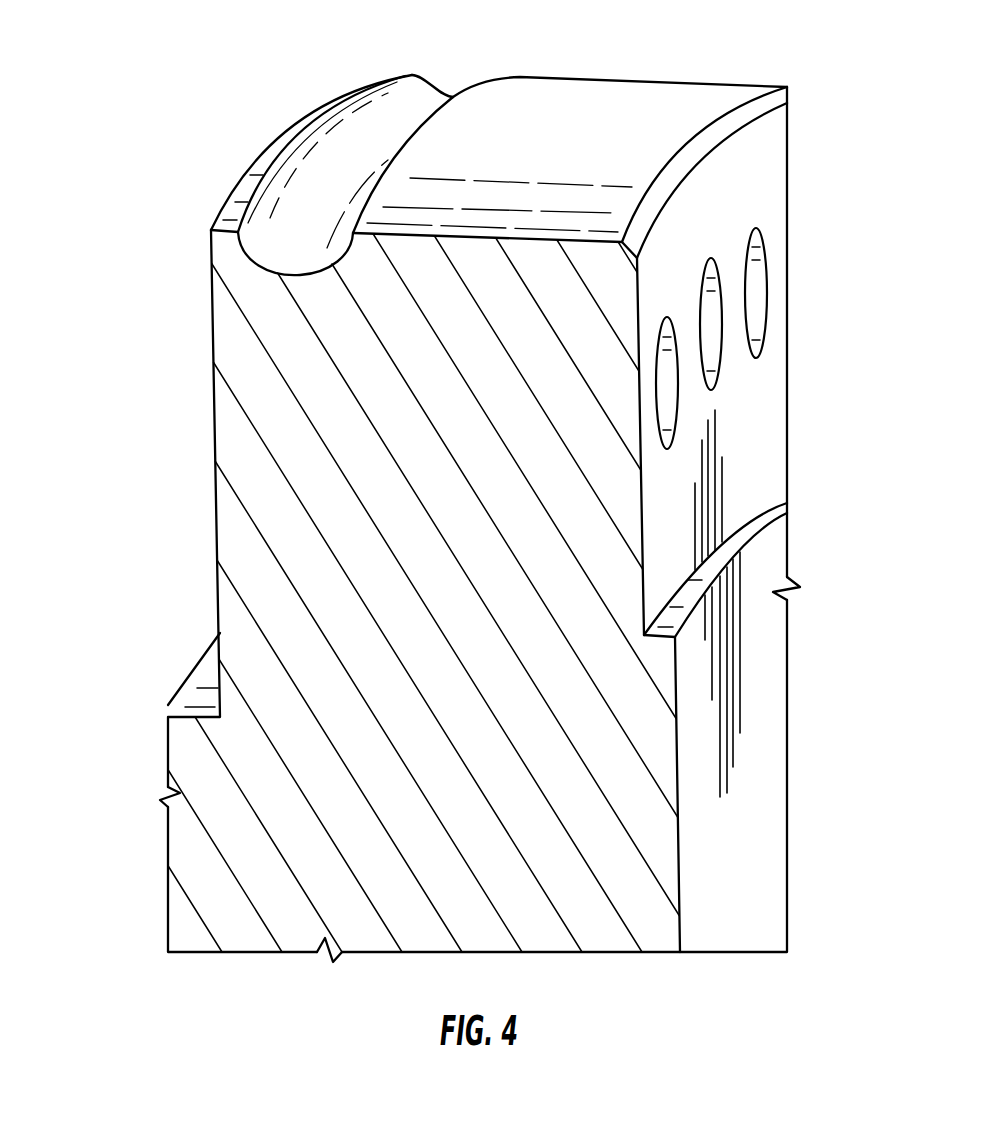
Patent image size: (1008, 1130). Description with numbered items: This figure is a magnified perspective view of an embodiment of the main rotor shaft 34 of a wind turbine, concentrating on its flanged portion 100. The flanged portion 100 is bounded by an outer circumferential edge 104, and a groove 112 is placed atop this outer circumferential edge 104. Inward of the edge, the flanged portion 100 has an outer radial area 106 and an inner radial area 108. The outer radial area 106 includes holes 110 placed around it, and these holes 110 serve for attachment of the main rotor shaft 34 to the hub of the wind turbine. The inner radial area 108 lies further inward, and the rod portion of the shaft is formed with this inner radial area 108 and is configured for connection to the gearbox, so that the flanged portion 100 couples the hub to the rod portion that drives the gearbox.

The main rotor shaft 34 is at (112, 153).
The flanged portion 100 is at (148, 273).
The outer circumferential edge 104 is at (515, 147).
The outer radial area 106 is at (758, 440).
The inner radial area 108 is at (758, 742).
The holes 110 is at (667, 373).
The groove 112 is at (382, 127).